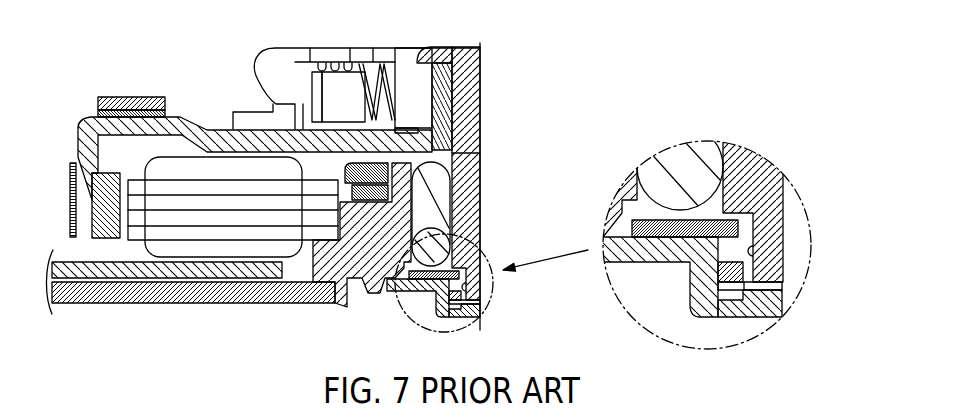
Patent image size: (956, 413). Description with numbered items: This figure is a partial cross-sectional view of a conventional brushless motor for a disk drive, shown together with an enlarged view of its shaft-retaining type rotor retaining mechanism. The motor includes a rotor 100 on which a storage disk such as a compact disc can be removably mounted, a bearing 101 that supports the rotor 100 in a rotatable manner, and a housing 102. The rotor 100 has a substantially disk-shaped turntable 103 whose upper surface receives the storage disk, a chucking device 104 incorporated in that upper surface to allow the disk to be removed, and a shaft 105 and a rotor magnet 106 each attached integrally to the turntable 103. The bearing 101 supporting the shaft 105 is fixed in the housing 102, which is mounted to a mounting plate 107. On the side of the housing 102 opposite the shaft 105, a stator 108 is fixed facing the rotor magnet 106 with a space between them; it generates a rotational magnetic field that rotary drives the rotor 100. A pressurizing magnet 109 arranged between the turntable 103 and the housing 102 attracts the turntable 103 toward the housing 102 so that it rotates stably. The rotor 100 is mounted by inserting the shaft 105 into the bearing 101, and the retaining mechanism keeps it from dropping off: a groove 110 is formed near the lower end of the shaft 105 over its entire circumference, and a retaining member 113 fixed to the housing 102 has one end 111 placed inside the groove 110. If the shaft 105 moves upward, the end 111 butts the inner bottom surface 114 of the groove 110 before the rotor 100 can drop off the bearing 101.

The rotor 100 is at (235, 95).
The bearing 101 is at (443, 197).
The housing 102 is at (367, 268).
The turntable 103 is at (87, 127).
The chucking device 104 is at (407, 55).
The shaft 105 is at (473, 98).
The rotor magnet 106 is at (92, 203).
The mounting plate 107 is at (148, 298).
The stator 108 is at (179, 167).
The pressurizing magnet 109 is at (383, 163).
The groove 110 is at (470, 284).
The end of retaining member 111 is at (465, 270).
The retaining member 113 is at (399, 282).
The inner bottom surface 114 is at (742, 285).